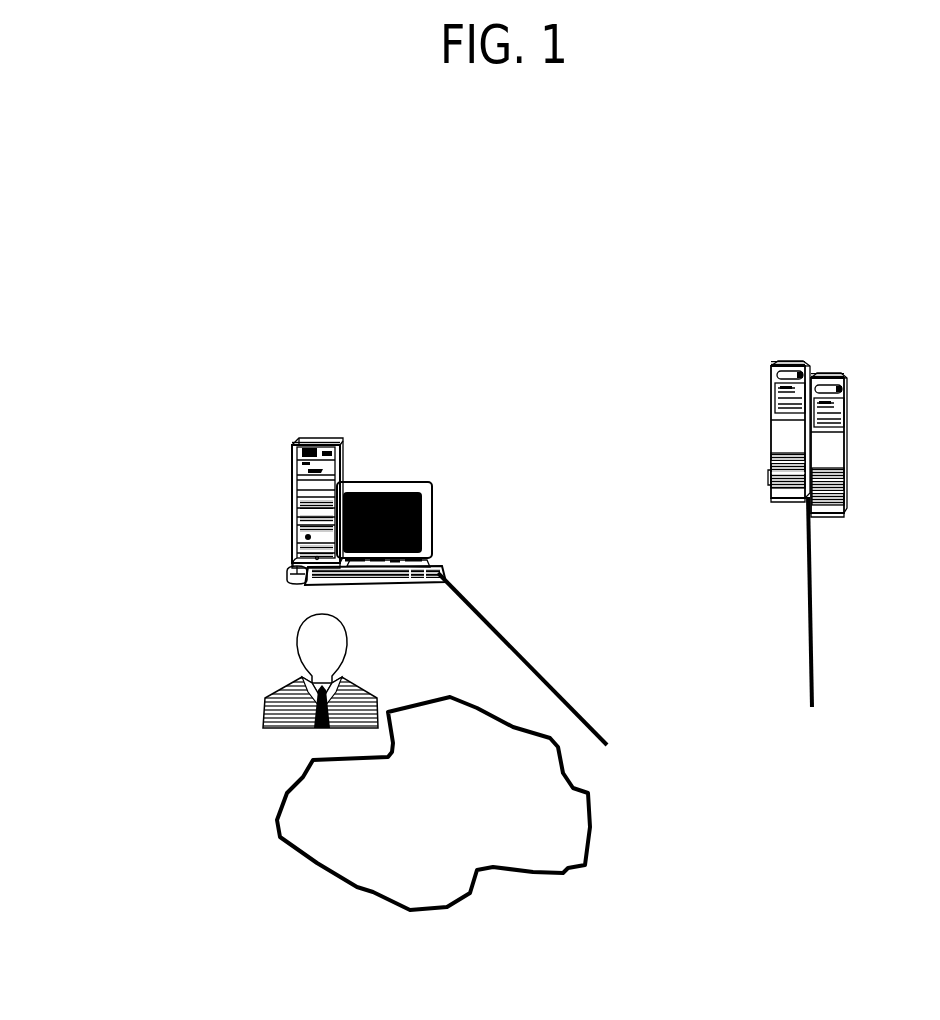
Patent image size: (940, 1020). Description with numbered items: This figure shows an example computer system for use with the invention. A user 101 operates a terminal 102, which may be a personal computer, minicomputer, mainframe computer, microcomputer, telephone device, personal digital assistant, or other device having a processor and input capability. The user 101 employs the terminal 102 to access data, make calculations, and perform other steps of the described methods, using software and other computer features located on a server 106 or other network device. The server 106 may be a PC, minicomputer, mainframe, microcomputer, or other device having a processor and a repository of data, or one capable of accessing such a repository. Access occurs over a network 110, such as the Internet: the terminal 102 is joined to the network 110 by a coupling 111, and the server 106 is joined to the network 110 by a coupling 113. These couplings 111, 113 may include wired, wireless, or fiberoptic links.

The user 101 is at (293, 687).
The terminal 102 is at (295, 503).
The server 106 is at (840, 377).
The network 110 is at (735, 710).
The coupling 111 is at (490, 627).
The coupling 113 is at (807, 577).